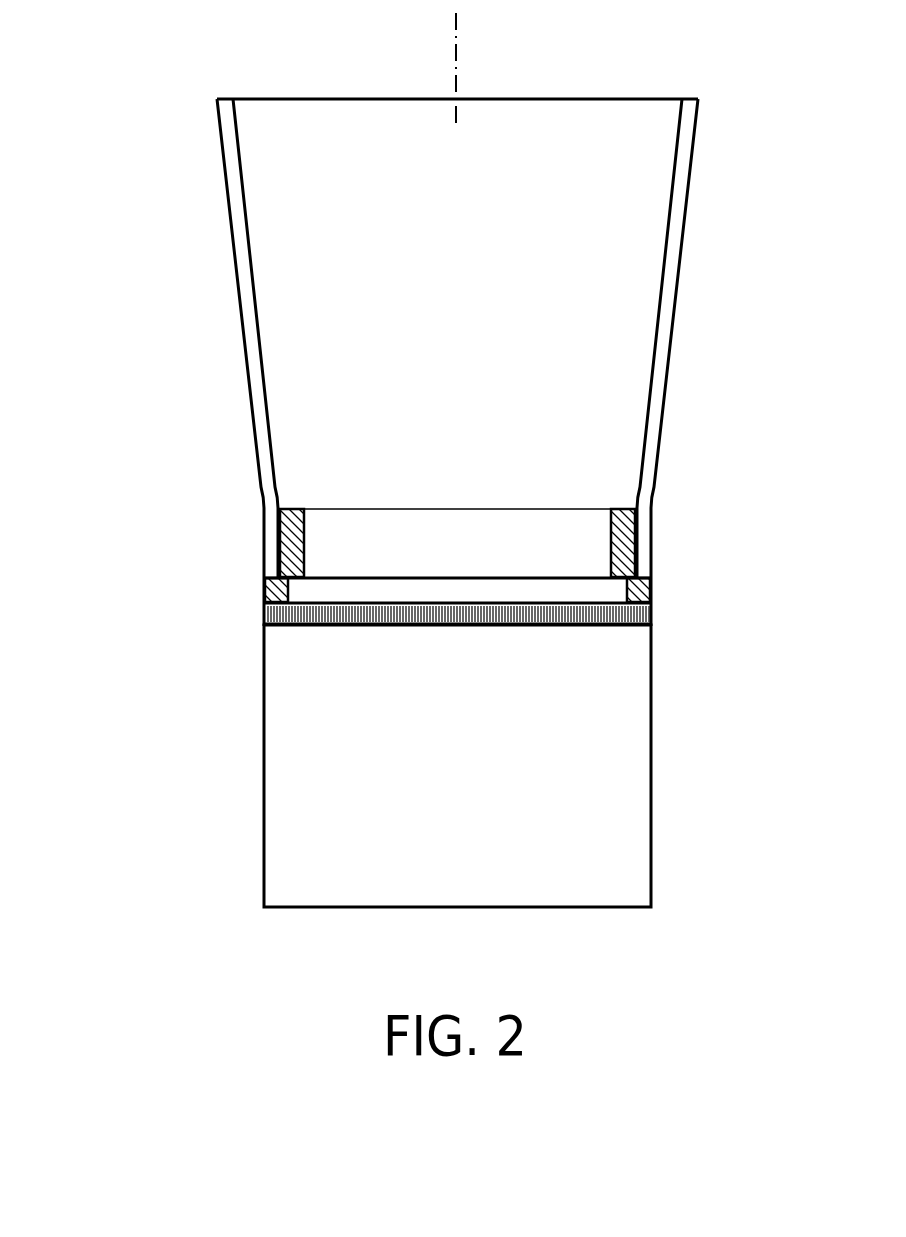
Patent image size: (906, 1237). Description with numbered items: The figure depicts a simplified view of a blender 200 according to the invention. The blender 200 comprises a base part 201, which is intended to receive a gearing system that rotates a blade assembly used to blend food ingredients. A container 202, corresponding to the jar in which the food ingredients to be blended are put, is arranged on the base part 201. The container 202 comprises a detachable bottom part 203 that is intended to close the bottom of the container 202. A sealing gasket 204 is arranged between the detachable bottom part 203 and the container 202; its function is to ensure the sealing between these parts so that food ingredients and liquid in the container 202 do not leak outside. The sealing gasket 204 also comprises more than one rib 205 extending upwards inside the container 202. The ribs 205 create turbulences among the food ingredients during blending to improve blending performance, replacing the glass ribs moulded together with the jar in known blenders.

The blender 200 is at (122, 67).
The base part 201 is at (653, 765).
The container 202 is at (678, 283).
The detachable bottom part 203 is at (653, 610).
The sealing gasket 204 is at (262, 585).
The rib 205 is at (653, 538).